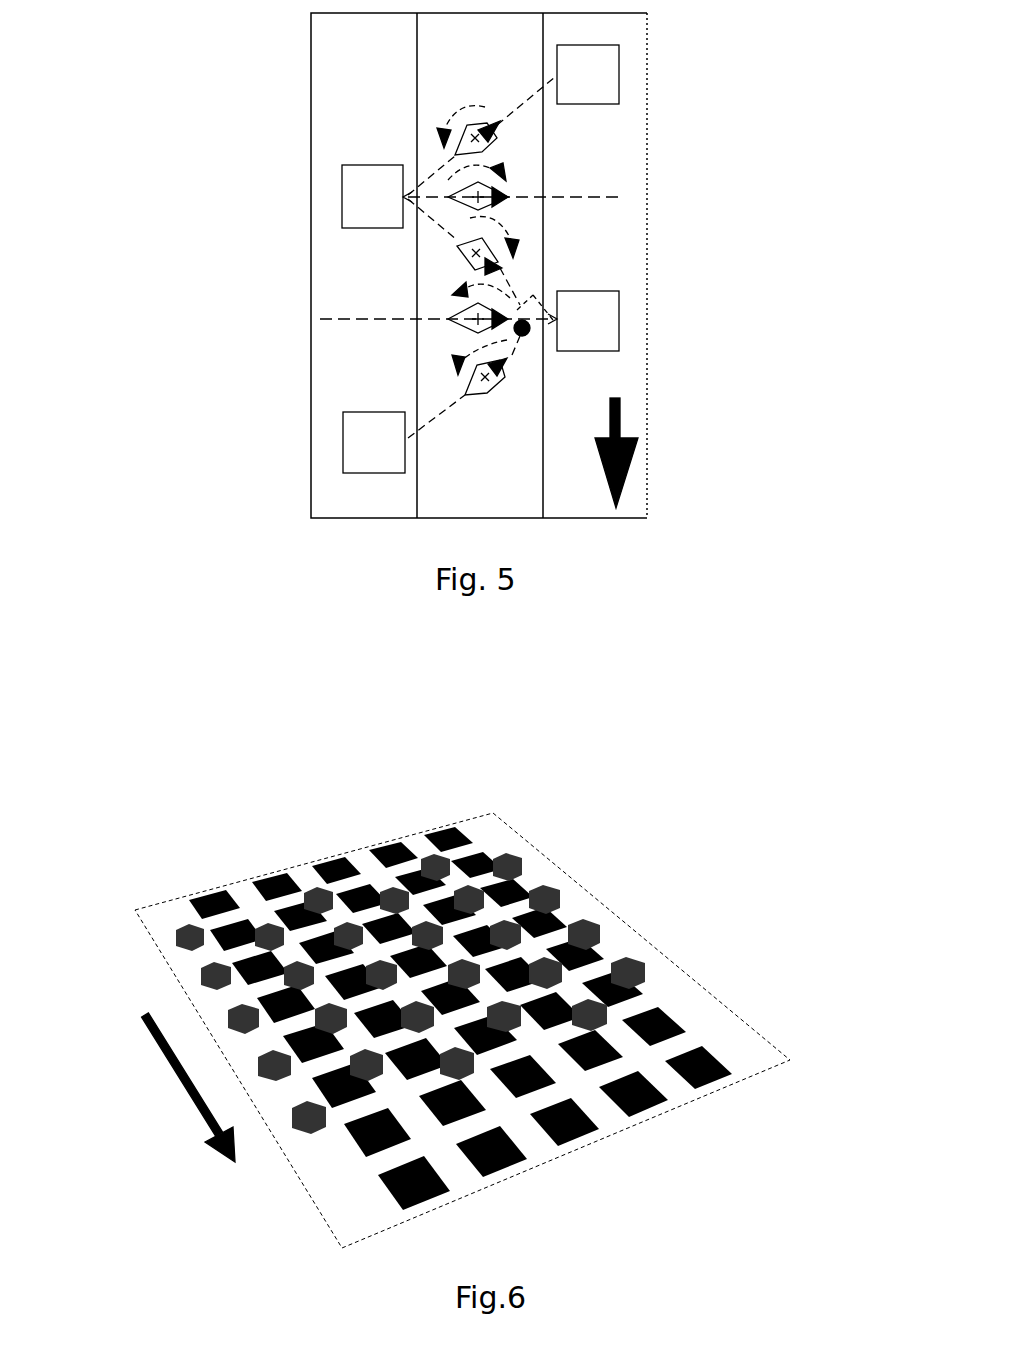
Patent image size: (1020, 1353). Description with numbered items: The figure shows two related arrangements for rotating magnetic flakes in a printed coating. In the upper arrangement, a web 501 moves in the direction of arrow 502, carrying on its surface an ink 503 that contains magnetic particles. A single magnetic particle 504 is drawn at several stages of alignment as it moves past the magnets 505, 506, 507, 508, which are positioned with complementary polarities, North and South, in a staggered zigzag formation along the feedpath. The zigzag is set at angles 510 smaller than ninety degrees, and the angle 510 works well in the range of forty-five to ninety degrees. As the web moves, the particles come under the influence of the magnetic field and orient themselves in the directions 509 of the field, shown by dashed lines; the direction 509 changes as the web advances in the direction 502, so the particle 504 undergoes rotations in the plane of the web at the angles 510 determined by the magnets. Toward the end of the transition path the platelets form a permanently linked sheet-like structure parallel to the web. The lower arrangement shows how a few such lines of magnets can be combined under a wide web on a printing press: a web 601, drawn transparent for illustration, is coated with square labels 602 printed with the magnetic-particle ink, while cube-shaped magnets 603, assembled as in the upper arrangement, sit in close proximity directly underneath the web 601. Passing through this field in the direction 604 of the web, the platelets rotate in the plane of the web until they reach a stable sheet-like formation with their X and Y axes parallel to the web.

In FIG. 5, the web 501 is at (329, 393).
In FIG. 5, the direction of web movement arrow 502 is at (620, 415).
In FIG. 5, the ink 503 is at (440, 487).
In FIG. 5, the magnetic particle 504 is at (497, 130).
In FIG. 5, the magnet 505 is at (354, 196).
In FIG. 5, the magnet 506 is at (353, 442).
In FIG. 5, the magnet 507 is at (612, 65).
In FIG. 5, the magnet 508 is at (608, 338).
In FIG. 5, the field direction 509 is at (530, 95).
In FIG. 5, the angle 510 is at (522, 328).
In FIG. 6, the web 601 is at (713, 1018).
In FIG. 6, the square labels 602 is at (713, 1050).
In FIG. 6, the cube-shaped magnets 603 is at (547, 890).
In FIG. 6, the direction of the web 604 is at (205, 1118).